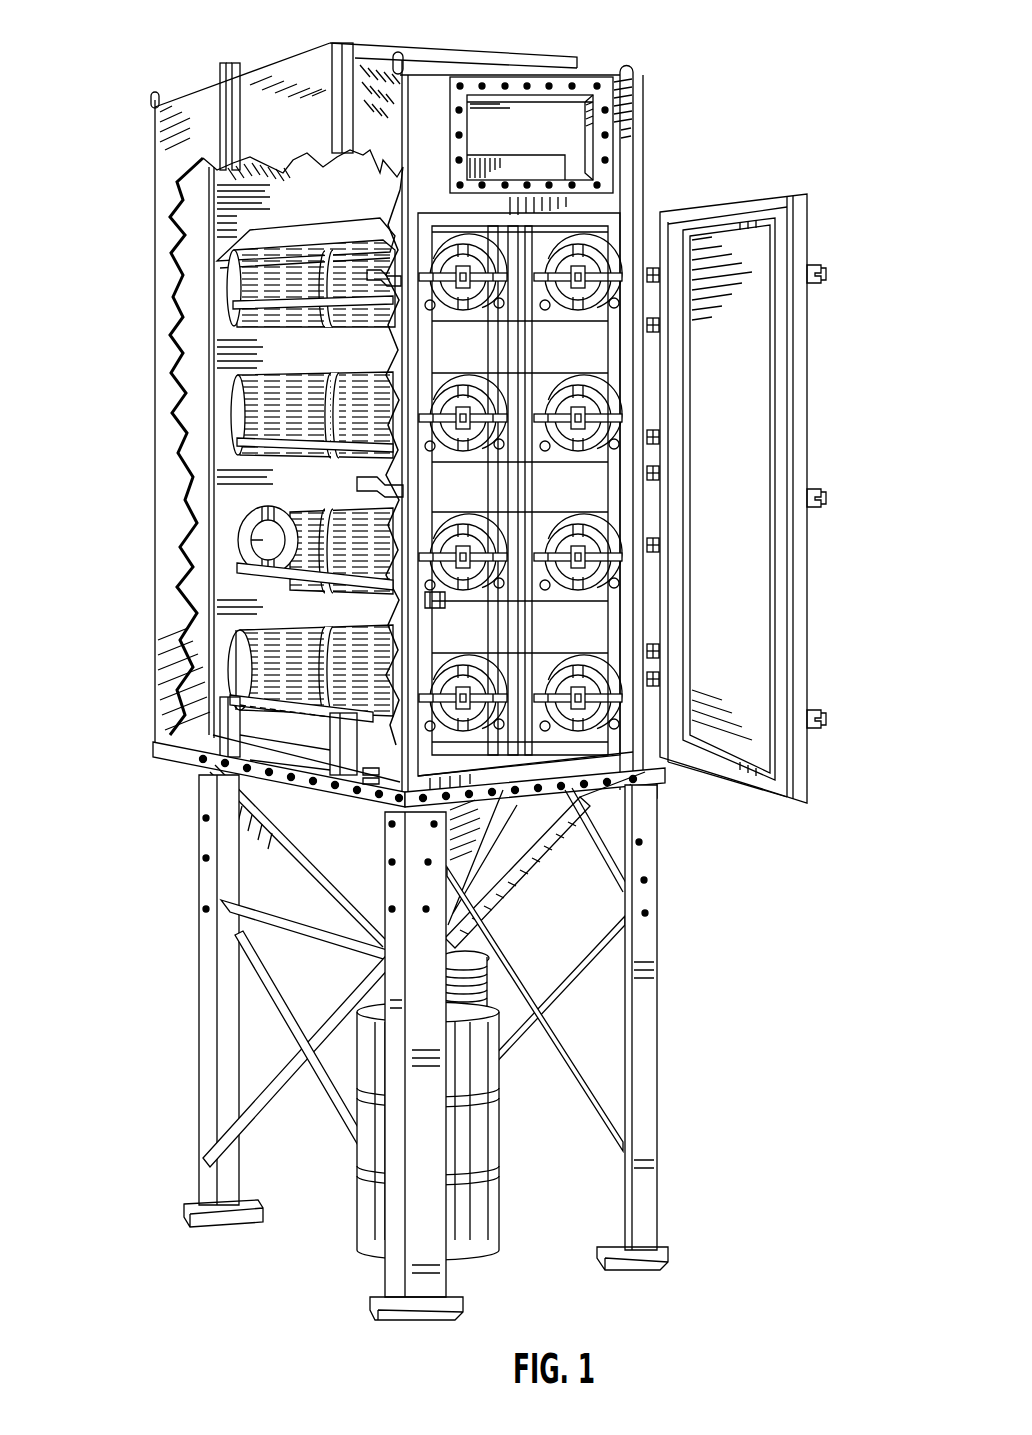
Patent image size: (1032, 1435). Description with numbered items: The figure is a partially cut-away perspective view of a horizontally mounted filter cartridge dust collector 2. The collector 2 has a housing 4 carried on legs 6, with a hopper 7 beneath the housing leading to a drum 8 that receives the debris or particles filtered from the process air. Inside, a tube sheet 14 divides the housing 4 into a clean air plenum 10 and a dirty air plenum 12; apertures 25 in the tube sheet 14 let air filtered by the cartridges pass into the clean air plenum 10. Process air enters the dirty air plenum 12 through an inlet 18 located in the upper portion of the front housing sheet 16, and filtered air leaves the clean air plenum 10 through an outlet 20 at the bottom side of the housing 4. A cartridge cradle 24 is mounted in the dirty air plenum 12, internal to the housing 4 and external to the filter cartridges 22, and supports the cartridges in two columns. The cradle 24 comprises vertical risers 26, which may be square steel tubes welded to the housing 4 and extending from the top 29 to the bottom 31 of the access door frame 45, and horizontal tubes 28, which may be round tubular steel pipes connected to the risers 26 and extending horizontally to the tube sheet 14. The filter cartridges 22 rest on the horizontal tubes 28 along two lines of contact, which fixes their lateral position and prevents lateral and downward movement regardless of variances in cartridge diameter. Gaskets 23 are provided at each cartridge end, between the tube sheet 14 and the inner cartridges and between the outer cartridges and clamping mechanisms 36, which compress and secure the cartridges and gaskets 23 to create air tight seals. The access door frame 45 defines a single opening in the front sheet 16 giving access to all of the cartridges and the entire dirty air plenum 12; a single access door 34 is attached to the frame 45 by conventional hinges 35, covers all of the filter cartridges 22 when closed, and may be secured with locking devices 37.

The horizontally mounted filter cartridge dust collector 2 is at (636, 43).
The housing 4 is at (155, 215).
The legs 6 is at (200, 963).
The hopper 7 is at (543, 850).
The drum 8 is at (490, 1127).
The clean air plenum 10 is at (190, 337).
The dirty air plenum 12 is at (223, 365).
The tube sheet 14 is at (222, 458).
The front housing sheet 16 is at (627, 150).
The inlet 18 is at (582, 125).
The outlet 20 is at (163, 748).
The filter cartridges 22 is at (487, 262).
The gaskets 23 is at (333, 377).
The cartridge cradle 24 is at (600, 357).
The apertures 25 is at (268, 522).
The vertical risers 26 is at (620, 520).
The horizontal tubes 28 is at (232, 310).
The top 29 is at (512, 190).
The bottom 31 is at (630, 792).
The access door 34 is at (797, 578).
The hinges 35 is at (663, 307).
The clamping mechanisms 36 is at (630, 690).
The locking devices 37 is at (812, 285).
The access door frame 45 is at (440, 600).